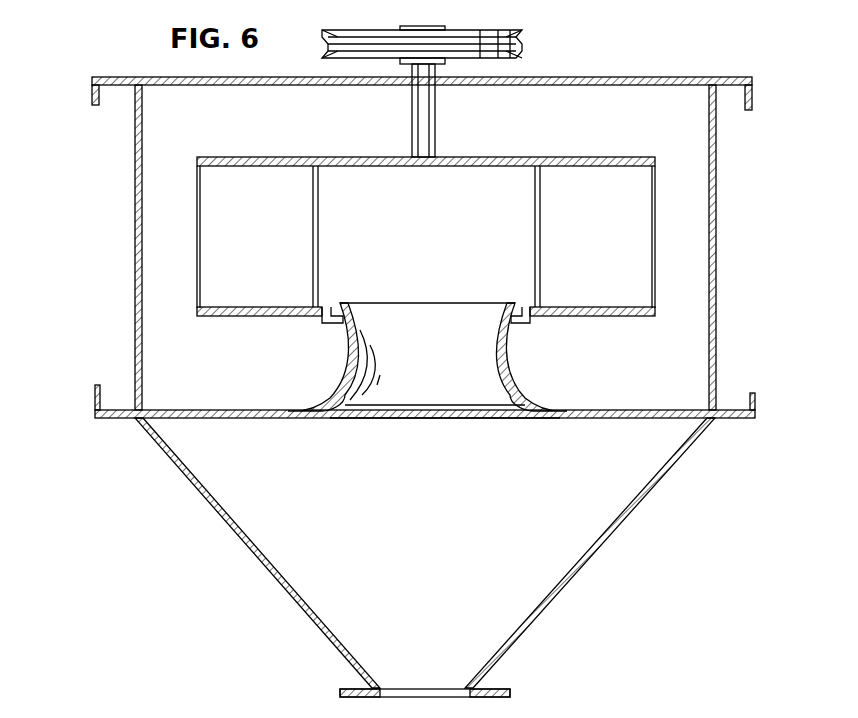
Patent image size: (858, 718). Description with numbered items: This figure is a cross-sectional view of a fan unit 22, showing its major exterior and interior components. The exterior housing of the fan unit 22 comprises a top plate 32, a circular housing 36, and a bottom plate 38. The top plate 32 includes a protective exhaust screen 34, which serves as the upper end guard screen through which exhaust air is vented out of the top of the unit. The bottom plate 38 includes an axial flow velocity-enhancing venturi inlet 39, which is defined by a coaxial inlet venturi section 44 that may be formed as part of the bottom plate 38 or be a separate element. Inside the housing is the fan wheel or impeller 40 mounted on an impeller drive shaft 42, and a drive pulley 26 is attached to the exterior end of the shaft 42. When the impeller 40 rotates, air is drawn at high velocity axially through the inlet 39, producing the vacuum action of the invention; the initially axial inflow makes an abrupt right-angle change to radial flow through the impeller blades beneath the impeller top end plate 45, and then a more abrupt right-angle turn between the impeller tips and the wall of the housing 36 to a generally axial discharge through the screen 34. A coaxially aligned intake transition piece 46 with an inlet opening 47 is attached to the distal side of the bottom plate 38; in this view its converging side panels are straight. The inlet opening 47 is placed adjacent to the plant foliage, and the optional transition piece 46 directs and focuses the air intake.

The fan unit 22 is at (62, 98).
The drive pulley 26 is at (507, 36).
The top plate 32 is at (730, 77).
The protective exhaust screen 34 is at (614, 77).
The circular housing 36 is at (716, 295).
The bottom plate 38 is at (743, 420).
The venturi inlet 39 is at (450, 390).
The impeller 40 is at (655, 233).
The impeller drive shaft 42 is at (437, 75).
The coaxial inlet venturi section 44 is at (518, 355).
The impeller top end plate 45 is at (603, 157).
The intake transition piece 46 is at (566, 590).
The inlet opening 47 is at (500, 698).